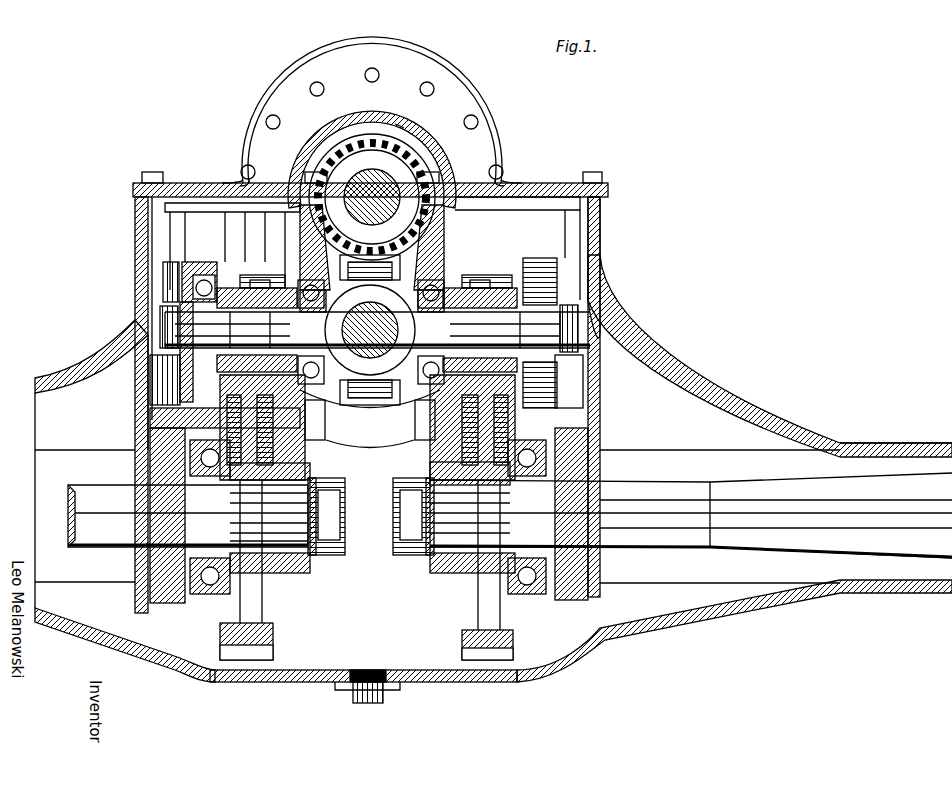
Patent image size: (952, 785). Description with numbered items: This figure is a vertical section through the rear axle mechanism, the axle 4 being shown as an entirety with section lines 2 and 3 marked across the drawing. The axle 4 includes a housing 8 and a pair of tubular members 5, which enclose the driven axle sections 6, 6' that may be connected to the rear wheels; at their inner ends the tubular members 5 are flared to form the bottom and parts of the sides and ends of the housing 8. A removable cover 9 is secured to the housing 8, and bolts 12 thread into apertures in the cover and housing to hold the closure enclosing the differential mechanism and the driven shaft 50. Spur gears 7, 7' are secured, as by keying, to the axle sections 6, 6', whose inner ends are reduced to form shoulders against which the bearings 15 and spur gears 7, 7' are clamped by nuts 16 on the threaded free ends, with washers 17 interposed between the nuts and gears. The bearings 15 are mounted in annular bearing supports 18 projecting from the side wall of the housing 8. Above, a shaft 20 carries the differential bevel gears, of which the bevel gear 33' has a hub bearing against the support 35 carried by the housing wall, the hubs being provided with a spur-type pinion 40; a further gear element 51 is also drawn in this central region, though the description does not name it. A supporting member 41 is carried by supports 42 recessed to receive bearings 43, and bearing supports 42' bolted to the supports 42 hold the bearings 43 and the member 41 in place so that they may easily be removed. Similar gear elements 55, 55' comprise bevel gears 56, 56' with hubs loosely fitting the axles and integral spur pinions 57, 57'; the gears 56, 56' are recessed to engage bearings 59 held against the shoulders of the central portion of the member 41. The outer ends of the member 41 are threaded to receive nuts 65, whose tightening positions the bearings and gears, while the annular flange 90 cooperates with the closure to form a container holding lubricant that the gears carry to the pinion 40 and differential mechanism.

The section line 2- 2 is at (372, 210).
The section line 3- 3 is at (546, 330).
The axle 4 is at (160, 330).
The tubular members 5 is at (905, 450).
The driven axle section 6 is at (691, 515).
The driven axle section 6' is at (188, 516).
The spur gear 7 is at (470, 570).
The spur gear 7' is at (260, 570).
The housing 8 is at (420, 680).
The removable cover 9 is at (493, 373).
The bolts 12 is at (268, 120).
The bearings 15 is at (500, 605).
The nuts 16 is at (405, 553).
The washers 17 is at (312, 560).
The annular bearing supports 18 is at (560, 585).
The shaft 20 is at (420, 170).
The differential bevel gear 33' is at (444, 98).
The support 35 is at (366, 225).
The pinion 40 is at (372, 157).
The supporting member 41 is at (377, 330).
The supports 42 is at (343, 381).
The bearing supports 42' is at (400, 318).
The bearings 43 is at (190, 290).
The driven shaft 50 is at (480, 240).
The side gear 51 is at (368, 408).
The gear element 55 is at (489, 262).
The gear element 55' is at (265, 262).
The bevel gear 56 is at (453, 258).
The bevel gear 56' is at (291, 258).
The spur pinion 57 is at (492, 272).
The spur pinion 57' is at (251, 275).
The bearings 59 is at (370, 332).
The nuts 65 is at (165, 318).
The annular flange 90 is at (372, 412).